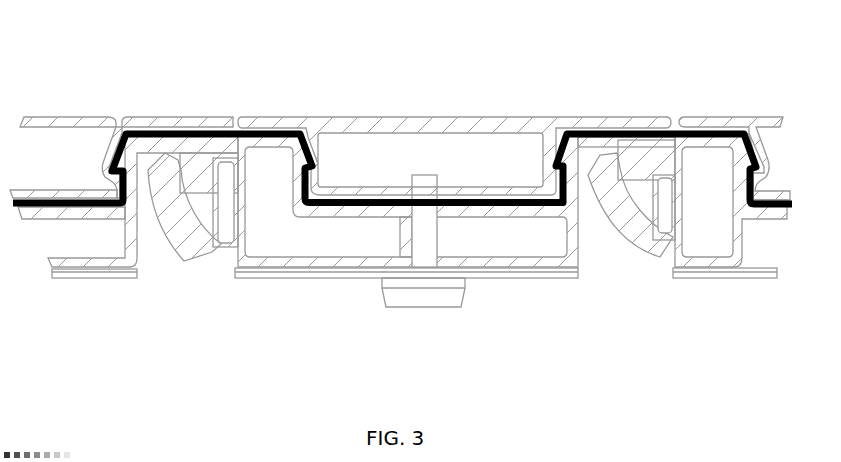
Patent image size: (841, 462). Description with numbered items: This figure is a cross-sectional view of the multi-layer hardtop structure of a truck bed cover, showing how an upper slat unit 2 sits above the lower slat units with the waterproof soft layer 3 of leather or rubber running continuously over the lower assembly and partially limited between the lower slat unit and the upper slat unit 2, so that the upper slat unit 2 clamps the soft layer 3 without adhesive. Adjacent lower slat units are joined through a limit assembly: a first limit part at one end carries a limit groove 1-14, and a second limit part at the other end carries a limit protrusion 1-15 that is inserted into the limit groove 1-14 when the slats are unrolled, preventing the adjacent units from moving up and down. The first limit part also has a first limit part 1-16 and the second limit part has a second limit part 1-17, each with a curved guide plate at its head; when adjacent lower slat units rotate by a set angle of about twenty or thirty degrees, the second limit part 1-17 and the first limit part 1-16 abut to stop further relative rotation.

The upper slat unit 2 is at (427, 117).
The soft layer 3 is at (233, 129).
The limit groove 1-14 is at (668, 182).
The limit protrusion 1-15 is at (672, 205).
The first limit part 1-16 is at (225, 225).
The second limit part 1-17 is at (178, 240).